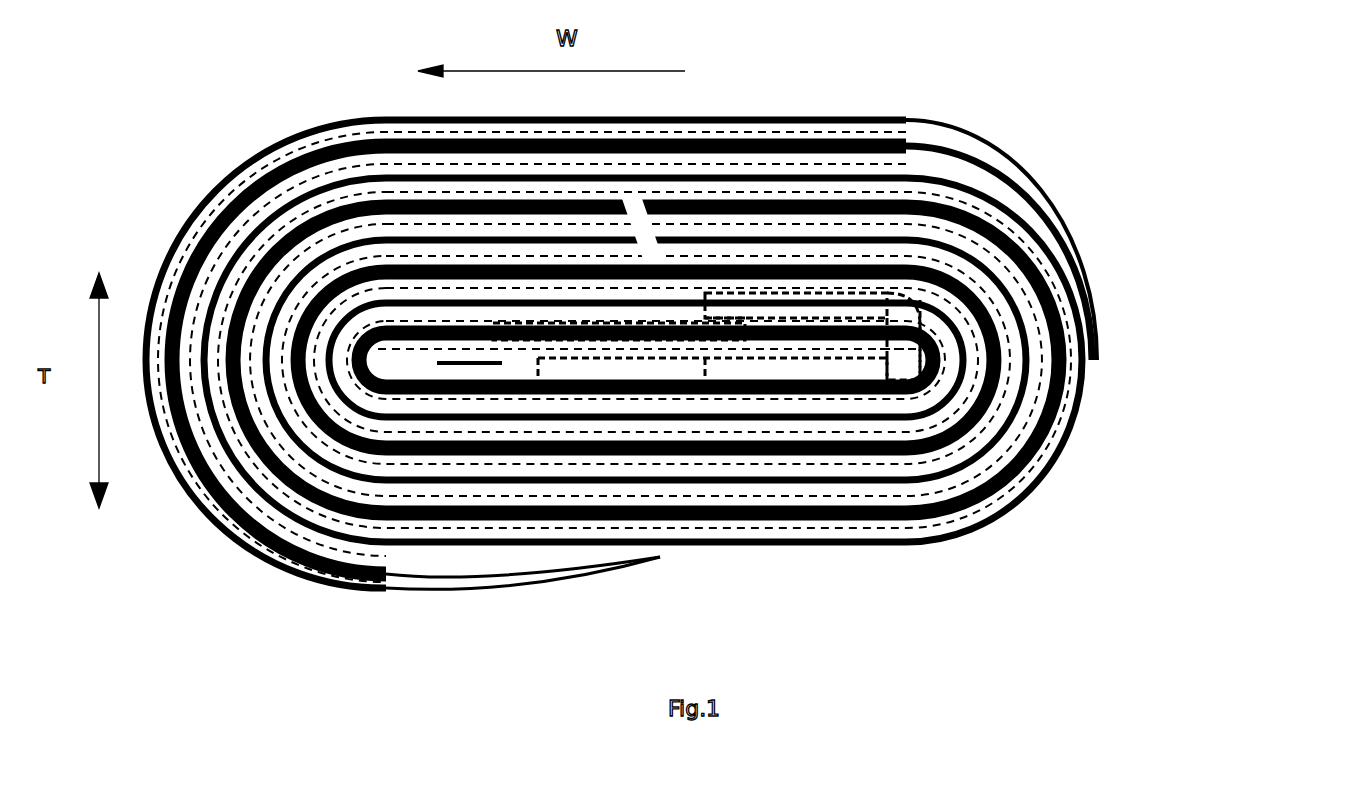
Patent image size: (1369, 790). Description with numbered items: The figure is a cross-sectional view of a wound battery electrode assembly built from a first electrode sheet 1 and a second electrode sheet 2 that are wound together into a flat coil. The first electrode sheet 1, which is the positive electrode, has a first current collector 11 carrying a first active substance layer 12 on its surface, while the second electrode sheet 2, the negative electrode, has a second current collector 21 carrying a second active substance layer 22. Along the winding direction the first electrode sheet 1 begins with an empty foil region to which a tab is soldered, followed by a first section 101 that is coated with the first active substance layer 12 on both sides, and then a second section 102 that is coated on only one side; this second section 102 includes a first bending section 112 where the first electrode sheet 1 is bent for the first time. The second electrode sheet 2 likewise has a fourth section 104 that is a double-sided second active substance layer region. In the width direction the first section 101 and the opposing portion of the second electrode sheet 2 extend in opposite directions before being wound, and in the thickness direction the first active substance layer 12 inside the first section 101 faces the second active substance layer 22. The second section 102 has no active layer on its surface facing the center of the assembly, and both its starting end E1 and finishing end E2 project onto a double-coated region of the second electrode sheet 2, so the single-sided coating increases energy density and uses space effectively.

The first electrode sheet 1 is at (712, 492).
The first current collector 11 is at (650, 368).
The first active substance layer 12 is at (637, 372).
The second electrode sheet 2 is at (911, 243).
The second current collector 21 is at (725, 322).
The second active substance layer 22 is at (757, 320).
The first section 101 is at (551, 380).
The second section 102 is at (870, 293).
The fourth section 104 is at (668, 325).
The first bending section 112 is at (922, 339).
The starting end E1 is at (710, 362).
The finishing end E2 is at (712, 325).